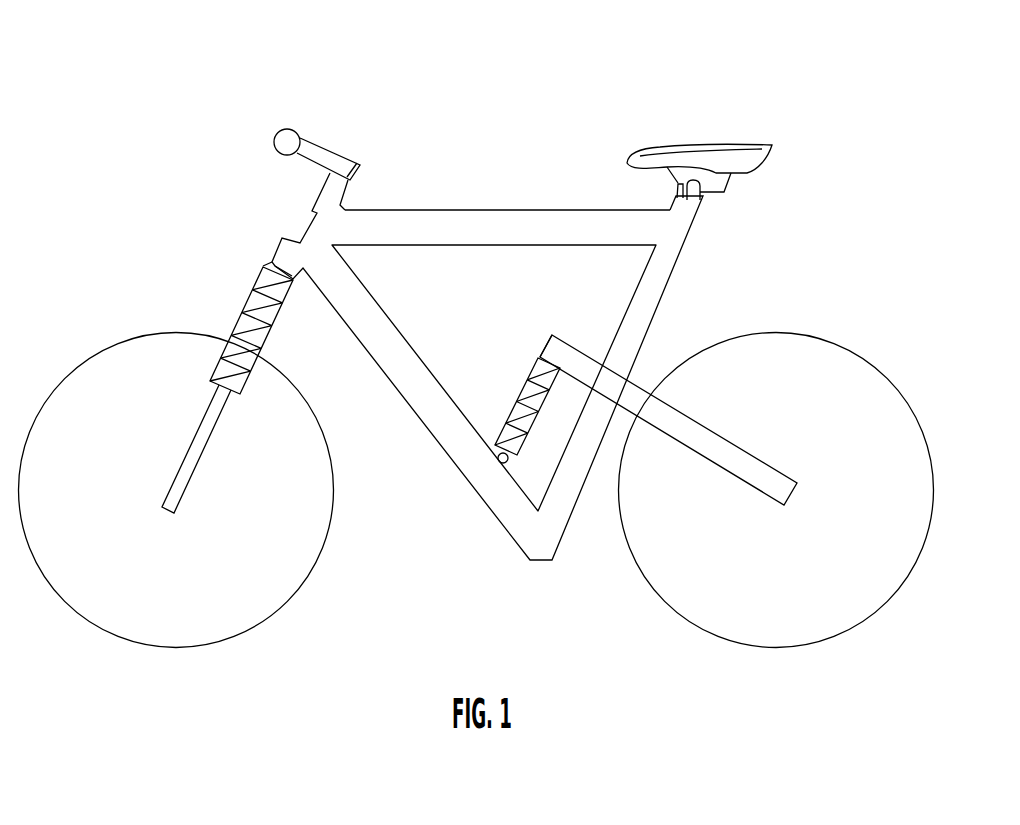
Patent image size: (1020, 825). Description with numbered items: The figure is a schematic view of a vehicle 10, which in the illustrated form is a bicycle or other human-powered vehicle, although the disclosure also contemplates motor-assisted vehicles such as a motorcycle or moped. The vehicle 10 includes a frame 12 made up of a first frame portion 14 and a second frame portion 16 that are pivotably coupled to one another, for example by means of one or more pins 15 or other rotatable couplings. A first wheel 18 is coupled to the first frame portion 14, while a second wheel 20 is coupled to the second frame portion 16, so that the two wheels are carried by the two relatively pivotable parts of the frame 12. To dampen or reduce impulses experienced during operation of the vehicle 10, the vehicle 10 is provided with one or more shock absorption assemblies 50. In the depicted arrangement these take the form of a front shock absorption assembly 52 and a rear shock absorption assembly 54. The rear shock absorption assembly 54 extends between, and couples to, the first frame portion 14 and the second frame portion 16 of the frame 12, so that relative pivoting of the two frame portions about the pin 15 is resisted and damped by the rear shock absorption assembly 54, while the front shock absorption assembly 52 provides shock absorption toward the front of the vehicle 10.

The vehicle 10 is at (183, 87).
The frame 12 is at (720, 281).
The first frame portion 14 is at (470, 223).
The pin 15 is at (610, 362).
The second frame portion 16 is at (555, 352).
The first wheel 18 is at (88, 362).
The second wheel 20 is at (877, 367).
The shock absorption assembly 50 is at (361, 346).
The front shock absorption assembly 52 is at (242, 315).
The rear shock absorption assembly 54 is at (510, 420).